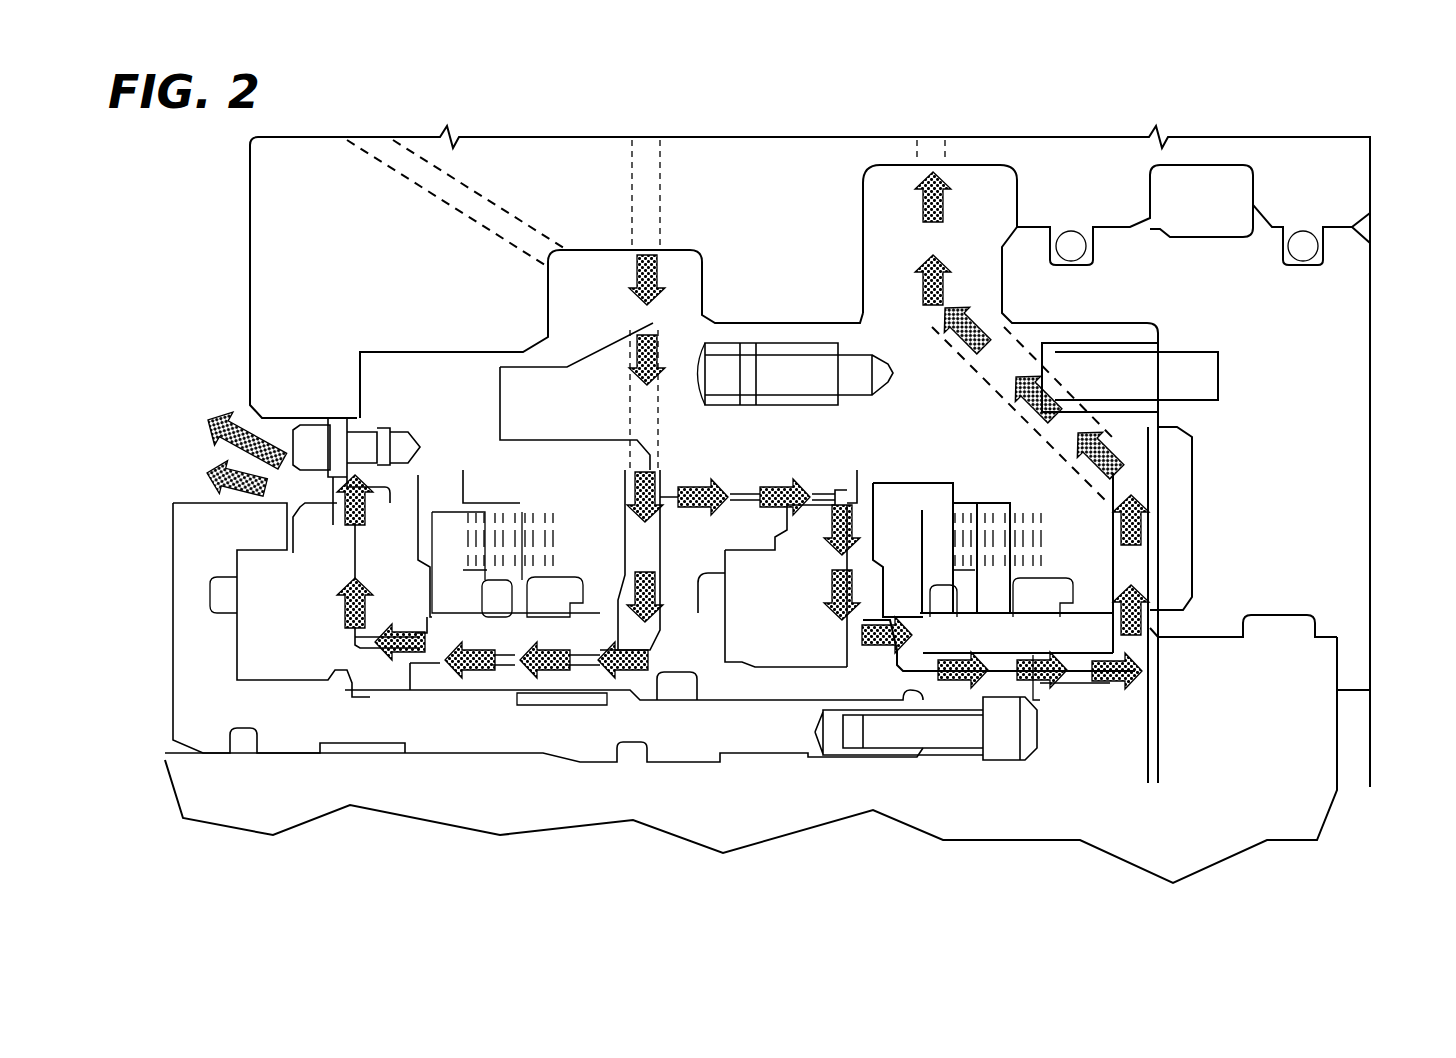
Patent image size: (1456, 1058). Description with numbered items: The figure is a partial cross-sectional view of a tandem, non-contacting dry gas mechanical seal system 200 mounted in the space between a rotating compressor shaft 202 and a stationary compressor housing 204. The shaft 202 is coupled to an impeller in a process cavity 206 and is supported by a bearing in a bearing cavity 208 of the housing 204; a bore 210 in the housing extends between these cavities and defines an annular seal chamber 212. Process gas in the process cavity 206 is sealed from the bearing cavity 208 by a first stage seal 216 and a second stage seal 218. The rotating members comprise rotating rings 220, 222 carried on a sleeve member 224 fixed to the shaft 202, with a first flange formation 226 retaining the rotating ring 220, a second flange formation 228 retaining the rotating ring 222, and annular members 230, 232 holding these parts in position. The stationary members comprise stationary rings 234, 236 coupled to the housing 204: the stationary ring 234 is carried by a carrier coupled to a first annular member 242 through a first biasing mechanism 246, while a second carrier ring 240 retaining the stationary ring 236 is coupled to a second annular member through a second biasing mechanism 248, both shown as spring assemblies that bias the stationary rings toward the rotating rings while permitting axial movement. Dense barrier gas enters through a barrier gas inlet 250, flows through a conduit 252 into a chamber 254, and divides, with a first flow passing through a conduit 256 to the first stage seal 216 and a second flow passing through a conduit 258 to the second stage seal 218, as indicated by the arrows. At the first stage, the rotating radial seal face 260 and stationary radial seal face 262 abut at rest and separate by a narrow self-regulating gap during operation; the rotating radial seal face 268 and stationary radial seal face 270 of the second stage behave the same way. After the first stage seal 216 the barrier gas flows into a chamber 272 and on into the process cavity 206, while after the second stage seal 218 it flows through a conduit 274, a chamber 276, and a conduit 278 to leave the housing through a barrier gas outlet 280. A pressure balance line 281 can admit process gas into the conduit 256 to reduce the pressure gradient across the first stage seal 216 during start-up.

The mechanical seal system 200 is at (1296, 92).
The rotating compressor shaft 202 is at (302, 803).
The compressor housing 204 is at (575, 293).
The process cavity 206 is at (209, 447).
The bearing cavity 208 is at (1242, 605).
The bore 210 is at (423, 490).
The annular seal chamber 212 is at (446, 497).
The first stage seal 216 is at (390, 505).
The second stage seal 218 is at (848, 562).
The rotating ring 220 is at (317, 640).
The rotating ring 222 is at (787, 640).
The sleeve member 224 is at (590, 740).
The first flange formation 226 is at (187, 552).
The second flange formation 228 is at (700, 653).
The annular member 230 is at (437, 628).
The annular member 232 is at (1045, 700).
The stationary ring 234 is at (465, 645).
The stationary ring 236 is at (905, 600).
The second carrier ring 240 is at (1003, 687).
The first annular member 242 is at (633, 486).
The first biasing mechanism 246 is at (507, 497).
The second biasing mechanism 248 is at (990, 513).
The barrier gas inlet 250 is at (653, 140).
The conduit 252 is at (655, 540).
The chamber 254 is at (610, 500).
The conduit 256 is at (650, 700).
The conduit 258 is at (752, 520).
The rotating radial seal face 260 is at (417, 530).
The stationary radial seal face 262 is at (413, 603).
The rotating radial seal face 268 is at (873, 590).
The stationary radial seal face 270 is at (847, 642).
The chamber 272 is at (362, 558).
The conduit 274 is at (1033, 683).
The chamber 276 is at (1077, 427).
The conduit 278 is at (1133, 563).
The barrier gas outlet 280 is at (930, 148).
The pressure balance line 281 is at (462, 186).